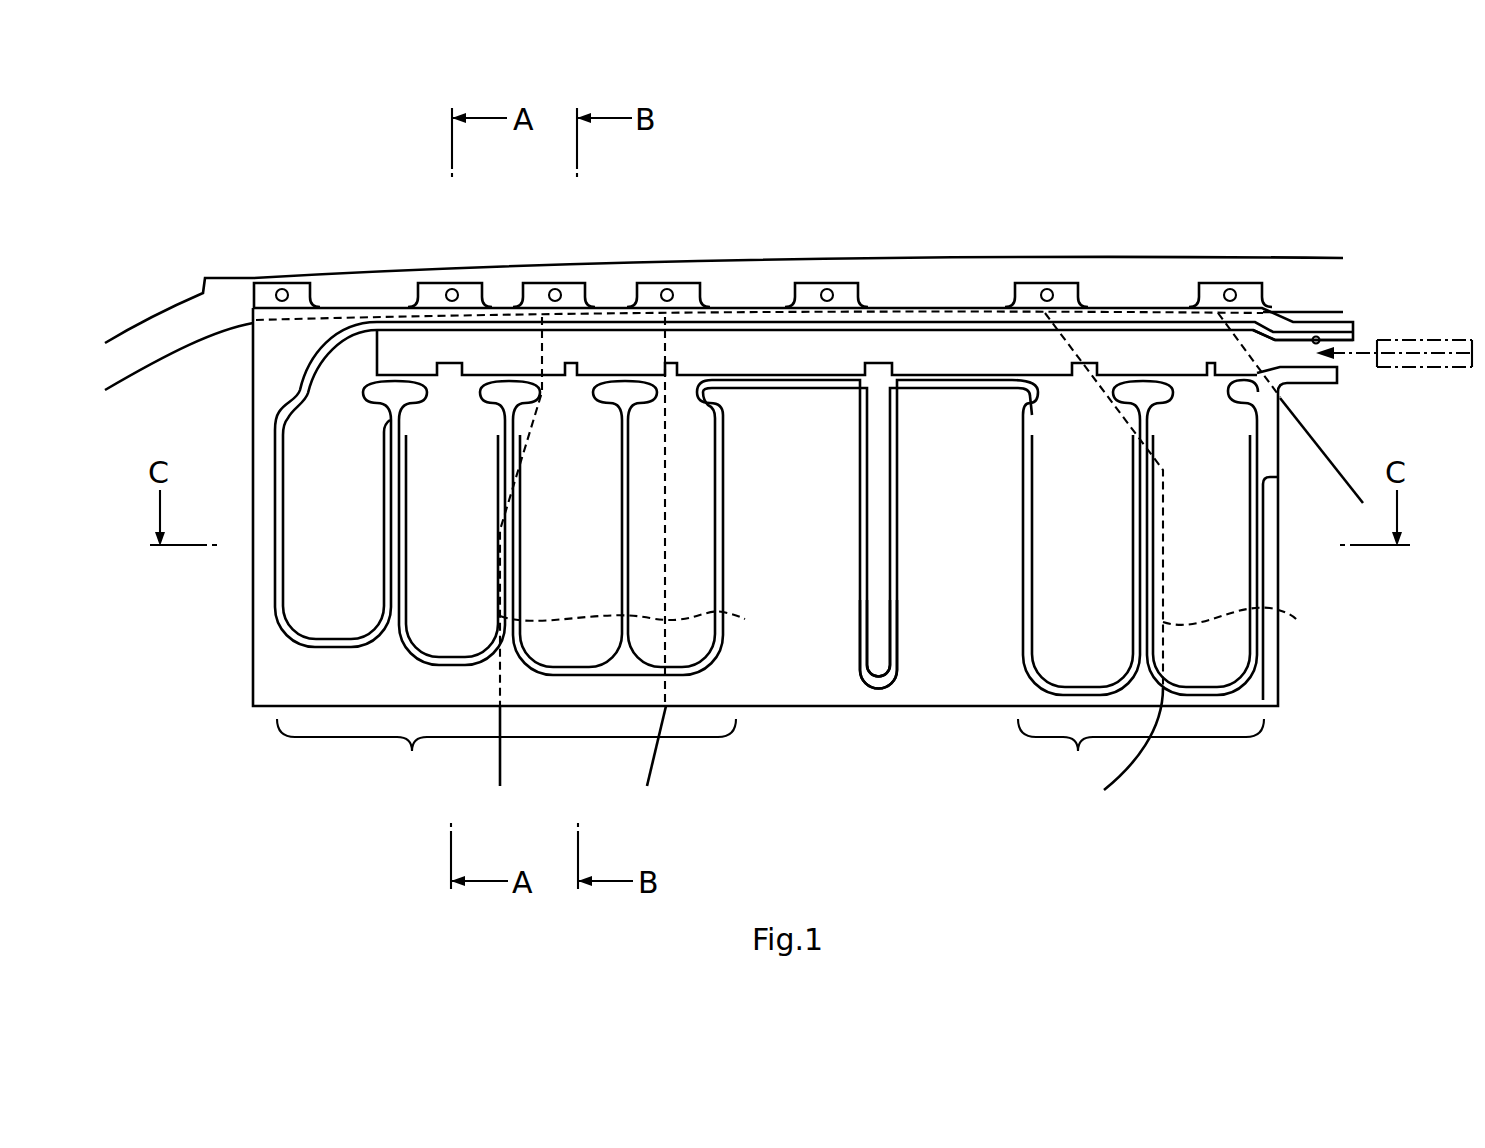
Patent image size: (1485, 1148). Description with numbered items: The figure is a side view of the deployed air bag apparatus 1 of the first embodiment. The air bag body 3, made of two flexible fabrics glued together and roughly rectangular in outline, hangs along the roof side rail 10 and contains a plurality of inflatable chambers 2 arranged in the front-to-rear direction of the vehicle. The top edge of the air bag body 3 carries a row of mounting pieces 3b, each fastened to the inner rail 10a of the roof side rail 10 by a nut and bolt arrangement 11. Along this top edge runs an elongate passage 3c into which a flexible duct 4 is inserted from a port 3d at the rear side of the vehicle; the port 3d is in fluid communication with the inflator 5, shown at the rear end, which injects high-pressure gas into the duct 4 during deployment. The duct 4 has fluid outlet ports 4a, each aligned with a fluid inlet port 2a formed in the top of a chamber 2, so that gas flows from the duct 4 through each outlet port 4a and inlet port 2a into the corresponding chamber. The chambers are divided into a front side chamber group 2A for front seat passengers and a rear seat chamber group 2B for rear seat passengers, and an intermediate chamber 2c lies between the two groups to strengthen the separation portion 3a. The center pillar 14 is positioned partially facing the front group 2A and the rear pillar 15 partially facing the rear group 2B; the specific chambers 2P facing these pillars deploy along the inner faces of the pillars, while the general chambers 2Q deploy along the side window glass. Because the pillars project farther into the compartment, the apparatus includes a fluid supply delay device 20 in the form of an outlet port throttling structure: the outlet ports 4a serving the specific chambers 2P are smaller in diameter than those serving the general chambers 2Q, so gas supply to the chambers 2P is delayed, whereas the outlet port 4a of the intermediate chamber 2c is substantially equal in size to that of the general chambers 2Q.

The air bag apparatus 1 is at (1267, 152).
The inflatable chambers 2 is at (776, 557).
The specific chambers 2P is at (604, 575).
The general chambers 2Q is at (375, 575).
The front side chamber group 2A is at (506, 757).
The rear seat chamber group 2B is at (1141, 757).
The fluid inlet port 2a is at (340, 400).
The intermediate chamber 2c is at (872, 563).
The air bag body 3 is at (251, 630).
The separation portion 3a is at (820, 677).
The mounting pieces 3b is at (268, 290).
The elongate passage 3c is at (959, 368).
The port 3d is at (1318, 337).
The flexible duct 4 is at (767, 358).
The fluid outlet port 4a is at (761, 401).
The fluid supply delay device 20 is at (1219, 418).
The inflator 5 is at (1435, 333).
The roof side rail 10 is at (724, 267).
The inner rail 10a is at (908, 268).
The nut and bolt arrangement 11 is at (284, 289).
The center pillar 14 is at (654, 765).
The rear pillar 15 is at (1320, 452).